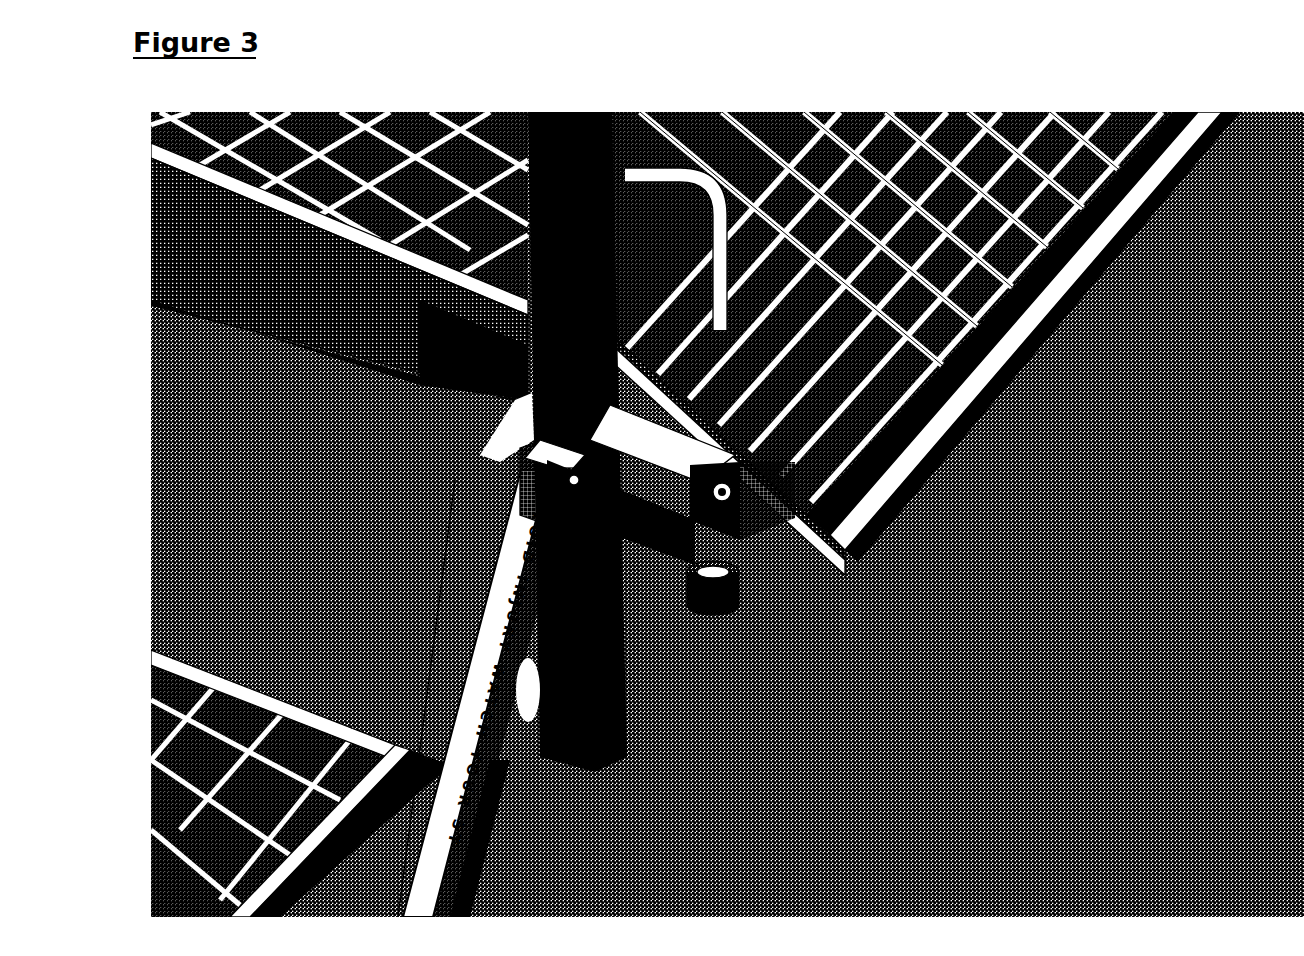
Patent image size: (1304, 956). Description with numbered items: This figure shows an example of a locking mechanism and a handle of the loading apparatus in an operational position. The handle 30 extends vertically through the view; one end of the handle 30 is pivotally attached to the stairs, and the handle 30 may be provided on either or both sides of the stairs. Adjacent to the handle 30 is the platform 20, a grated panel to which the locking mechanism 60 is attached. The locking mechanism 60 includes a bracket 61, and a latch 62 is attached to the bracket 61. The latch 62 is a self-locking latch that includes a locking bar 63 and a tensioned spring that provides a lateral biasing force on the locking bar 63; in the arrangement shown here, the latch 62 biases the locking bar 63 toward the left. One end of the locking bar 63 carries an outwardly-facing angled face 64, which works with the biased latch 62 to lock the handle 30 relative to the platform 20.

The platform 20 is at (995, 432).
The handle 30 is at (563, 338).
The locking mechanism 60 is at (768, 610).
The bracket 61 is at (745, 508).
The latch 62 is at (650, 543).
The locking bar 63 is at (575, 480).
The outwardly-facing angled face 64 is at (565, 485).